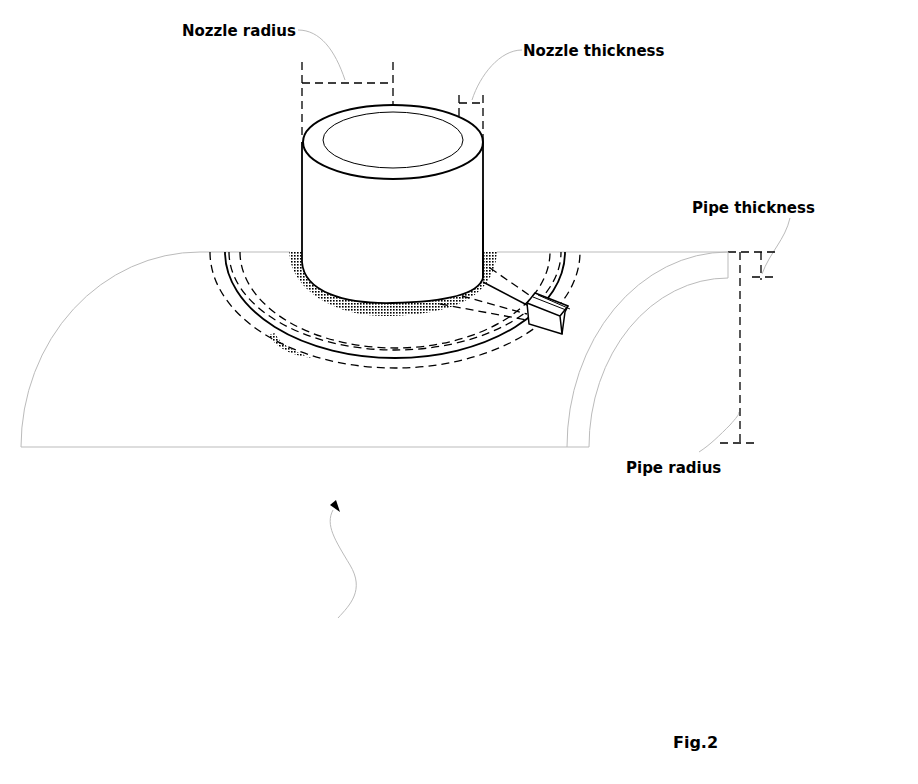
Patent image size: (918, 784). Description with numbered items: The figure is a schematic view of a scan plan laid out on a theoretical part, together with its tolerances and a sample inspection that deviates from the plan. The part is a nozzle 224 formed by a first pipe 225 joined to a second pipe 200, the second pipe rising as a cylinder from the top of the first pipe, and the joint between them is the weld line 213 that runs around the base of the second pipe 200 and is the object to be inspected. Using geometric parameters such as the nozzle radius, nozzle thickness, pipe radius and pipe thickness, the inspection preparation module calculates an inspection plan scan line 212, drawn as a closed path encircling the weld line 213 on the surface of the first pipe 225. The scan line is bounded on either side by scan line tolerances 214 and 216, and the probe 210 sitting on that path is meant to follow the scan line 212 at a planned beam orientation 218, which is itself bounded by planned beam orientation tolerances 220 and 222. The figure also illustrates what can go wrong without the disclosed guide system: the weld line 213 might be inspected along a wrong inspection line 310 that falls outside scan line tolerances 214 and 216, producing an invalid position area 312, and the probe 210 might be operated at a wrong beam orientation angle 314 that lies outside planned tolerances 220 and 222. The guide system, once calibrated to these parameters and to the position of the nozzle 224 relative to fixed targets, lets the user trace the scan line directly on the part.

The second pipe 200 is at (441, 191).
The probe 210 is at (598, 319).
The inspection plan scan line 212 is at (464, 339).
The weld line 213 is at (384, 270).
The scan line tolerance 214 is at (305, 349).
The scan line tolerance 216 is at (395, 246).
The planned beam orientation 218 is at (433, 239).
The planned beam orientation tolerance 220 is at (392, 281).
The planned beam orientation tolerance 222 is at (399, 290).
The nozzle 224 is at (333, 571).
The first pipe 225 is at (638, 362).
The wrong inspection line 310 is at (394, 320).
The invalid position area 312 is at (306, 372).
The wrong beam orientation angle 314 is at (477, 303).